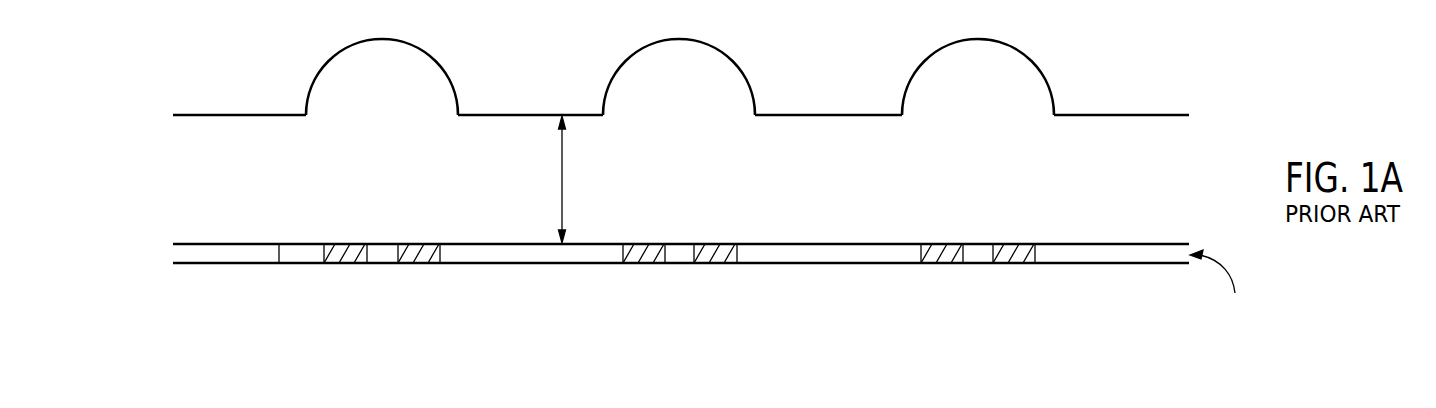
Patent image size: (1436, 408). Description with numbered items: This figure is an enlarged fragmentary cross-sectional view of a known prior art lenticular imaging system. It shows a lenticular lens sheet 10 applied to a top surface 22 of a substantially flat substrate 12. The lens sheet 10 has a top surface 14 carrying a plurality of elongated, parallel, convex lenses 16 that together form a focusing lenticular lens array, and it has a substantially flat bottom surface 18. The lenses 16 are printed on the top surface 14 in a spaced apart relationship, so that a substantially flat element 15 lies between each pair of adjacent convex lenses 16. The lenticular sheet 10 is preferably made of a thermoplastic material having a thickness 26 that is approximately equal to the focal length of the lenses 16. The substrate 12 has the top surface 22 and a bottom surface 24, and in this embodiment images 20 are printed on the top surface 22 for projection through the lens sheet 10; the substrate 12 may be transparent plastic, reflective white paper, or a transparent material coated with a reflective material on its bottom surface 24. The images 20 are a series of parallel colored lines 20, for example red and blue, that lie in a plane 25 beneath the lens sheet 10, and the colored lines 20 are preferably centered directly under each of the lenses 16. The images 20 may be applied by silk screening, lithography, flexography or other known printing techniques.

The lenticular lens sheet 10 is at (681, 59).
The substrate 12 is at (681, 270).
The top surface 14 is at (240, 114).
The substantially flat element 15 is at (535, 114).
The convex lenses 16 is at (383, 40).
The bottom surface 18 is at (279, 263).
The images 20 is at (402, 255).
The top surface 22 is at (795, 262).
The bottom surface 24 is at (856, 265).
The plane 25 is at (1219, 289).
The thickness 26 is at (576, 179).